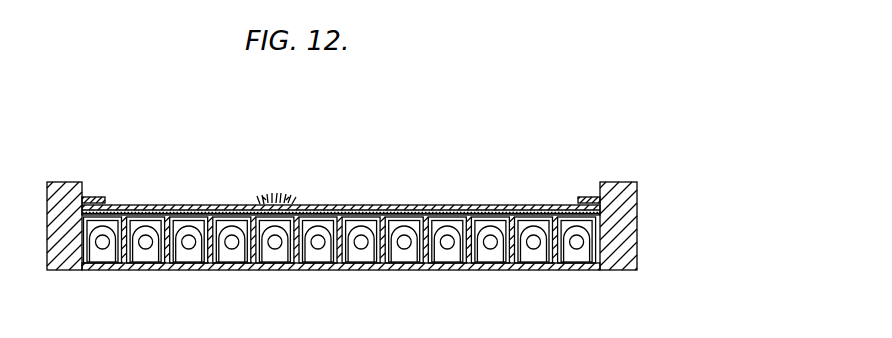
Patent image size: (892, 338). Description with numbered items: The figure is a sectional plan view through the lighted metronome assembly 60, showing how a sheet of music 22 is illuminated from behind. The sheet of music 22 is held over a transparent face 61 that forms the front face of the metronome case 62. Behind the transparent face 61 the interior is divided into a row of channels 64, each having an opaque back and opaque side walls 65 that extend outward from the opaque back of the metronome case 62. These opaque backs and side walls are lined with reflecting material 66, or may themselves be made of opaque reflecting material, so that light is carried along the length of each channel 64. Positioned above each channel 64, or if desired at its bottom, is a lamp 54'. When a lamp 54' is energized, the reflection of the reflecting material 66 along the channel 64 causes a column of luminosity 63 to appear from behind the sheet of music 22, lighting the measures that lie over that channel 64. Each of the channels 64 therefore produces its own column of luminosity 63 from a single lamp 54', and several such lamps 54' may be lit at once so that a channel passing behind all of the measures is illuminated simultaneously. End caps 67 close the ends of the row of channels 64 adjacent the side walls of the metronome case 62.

The heat exchanger assembly 60 is at (658, 214).
The sheet of music 22 is at (401, 206).
The transparent face 61 is at (120, 208).
The metronome case 62 is at (465, 263).
The luminosity 63 is at (280, 188).
The channel 64 is at (162, 220).
The opaque side walls 65 is at (255, 218).
The reflecting material 66 is at (305, 221).
The end cap 67 is at (93, 197).
The lamp 54' is at (340, 272).